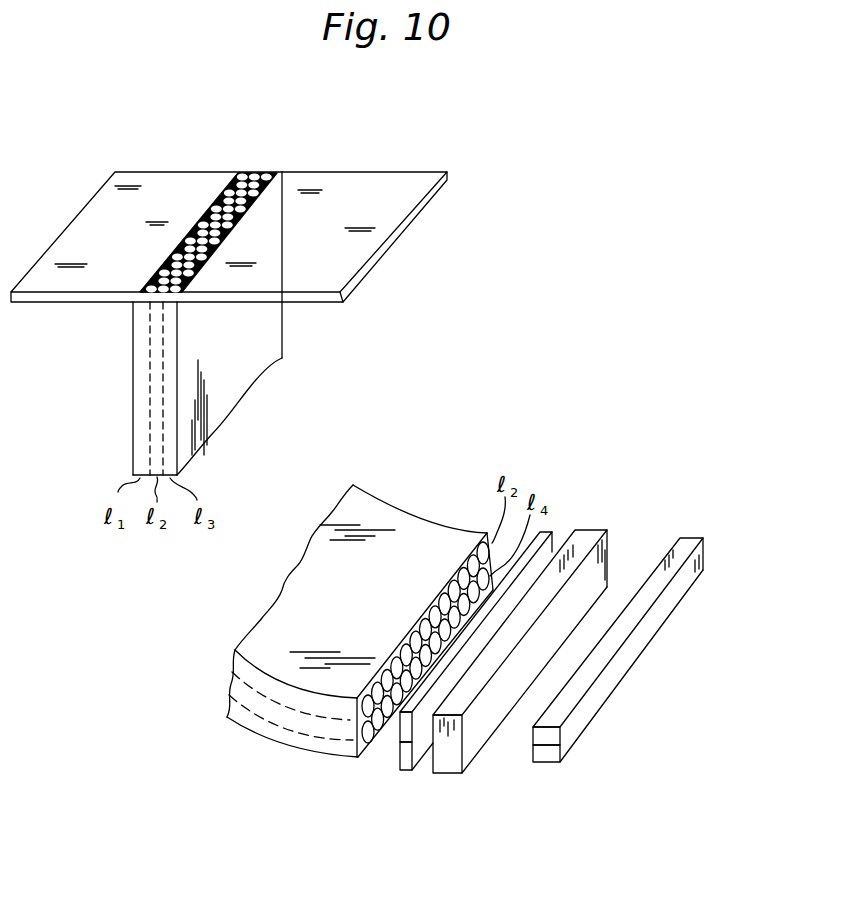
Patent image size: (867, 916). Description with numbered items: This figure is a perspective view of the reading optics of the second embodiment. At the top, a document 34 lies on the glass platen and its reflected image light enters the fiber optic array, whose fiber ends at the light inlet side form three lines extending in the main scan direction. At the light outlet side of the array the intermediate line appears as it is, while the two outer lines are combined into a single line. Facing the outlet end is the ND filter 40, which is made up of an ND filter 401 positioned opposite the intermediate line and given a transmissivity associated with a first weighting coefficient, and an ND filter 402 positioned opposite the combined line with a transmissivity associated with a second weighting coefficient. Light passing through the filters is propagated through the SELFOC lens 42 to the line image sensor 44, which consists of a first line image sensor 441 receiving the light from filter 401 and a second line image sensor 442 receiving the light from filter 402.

The document 34 is at (340, 184).
The ND filter 40 is at (464, 654).
The ND filter 401 is at (400, 730).
The ND filter 402 is at (407, 760).
The SELFOC lens 42 is at (617, 538).
The line image sensor 44 is at (613, 647).
The first line image sensor 441 is at (538, 740).
The second line image sensor 442 is at (549, 754).